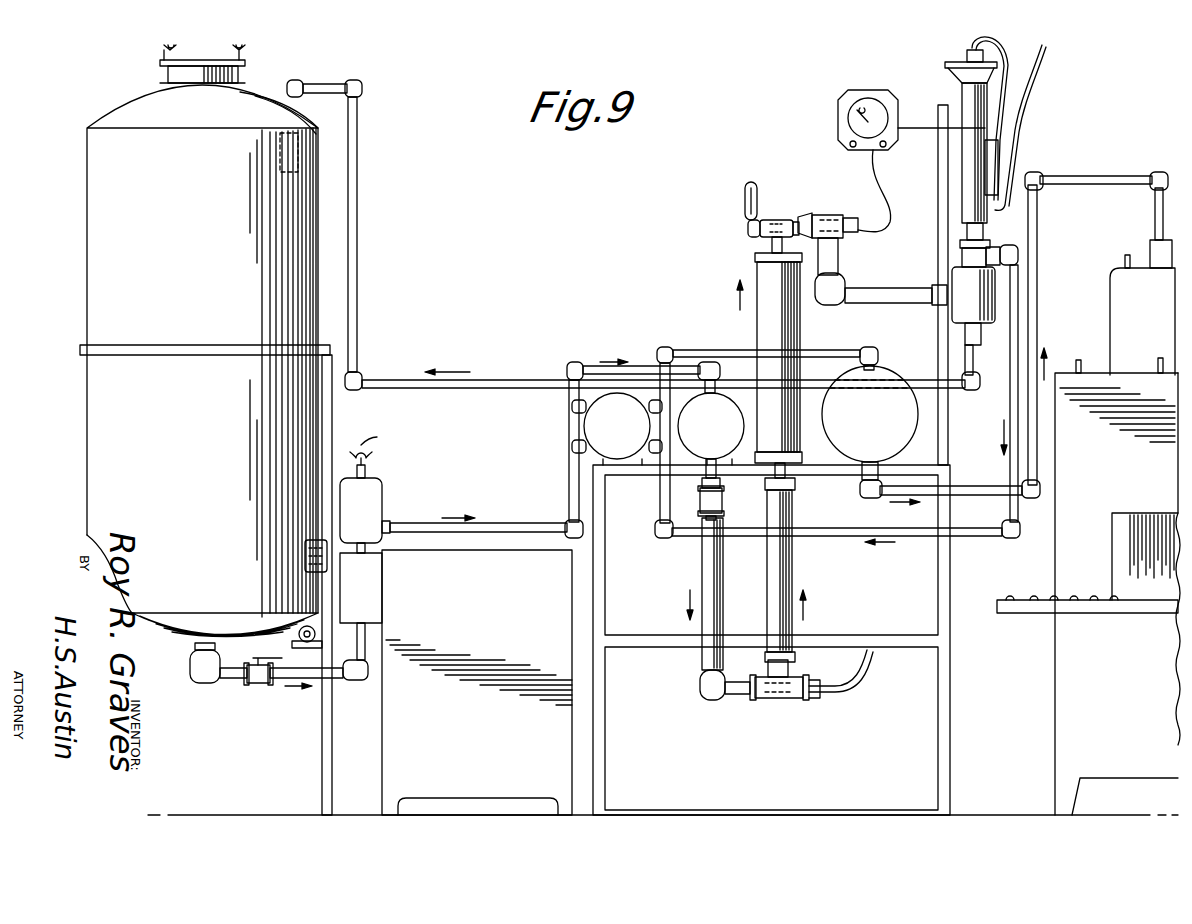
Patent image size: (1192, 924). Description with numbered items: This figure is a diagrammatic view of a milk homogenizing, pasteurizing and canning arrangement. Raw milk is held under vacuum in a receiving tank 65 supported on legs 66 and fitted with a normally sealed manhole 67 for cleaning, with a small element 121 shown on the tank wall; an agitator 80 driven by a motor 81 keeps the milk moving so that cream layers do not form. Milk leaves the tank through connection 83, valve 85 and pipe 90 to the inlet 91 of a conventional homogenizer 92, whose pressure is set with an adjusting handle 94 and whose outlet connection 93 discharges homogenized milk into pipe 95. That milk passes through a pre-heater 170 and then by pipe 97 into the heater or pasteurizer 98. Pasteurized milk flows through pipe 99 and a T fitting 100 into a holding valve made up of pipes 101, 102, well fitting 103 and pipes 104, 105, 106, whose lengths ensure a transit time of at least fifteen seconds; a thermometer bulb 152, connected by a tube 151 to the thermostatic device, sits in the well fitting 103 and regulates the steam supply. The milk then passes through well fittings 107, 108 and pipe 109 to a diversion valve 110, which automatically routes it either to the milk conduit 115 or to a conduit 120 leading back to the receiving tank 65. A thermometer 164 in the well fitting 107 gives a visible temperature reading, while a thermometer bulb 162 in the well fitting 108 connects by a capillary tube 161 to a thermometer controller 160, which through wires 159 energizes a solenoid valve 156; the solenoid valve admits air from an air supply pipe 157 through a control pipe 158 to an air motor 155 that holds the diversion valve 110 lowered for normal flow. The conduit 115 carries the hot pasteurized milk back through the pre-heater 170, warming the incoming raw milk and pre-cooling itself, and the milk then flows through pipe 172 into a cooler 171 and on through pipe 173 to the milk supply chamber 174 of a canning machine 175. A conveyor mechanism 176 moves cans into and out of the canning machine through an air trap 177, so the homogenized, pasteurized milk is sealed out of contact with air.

The receiving tank 65 is at (100, 235).
The legs 66 is at (322, 750).
The manhole 67 is at (200, 63).
The agitator 80 is at (316, 540).
The motor 81 is at (318, 636).
The connection 83 is at (230, 678).
The valve 85 is at (262, 683).
The pipe 90 is at (355, 678).
The inlet 91 is at (372, 588).
The homogenizer 92 is at (400, 718).
The outlet connection 93 is at (383, 490).
The adjusting handle 94 is at (368, 455).
The pipe 95 is at (512, 524).
The pipe 97 is at (620, 366).
The heater or pasteurizer 98 is at (690, 425).
The pipe 99 is at (720, 480).
The T fitting 100 is at (722, 500).
The pipe 101 is at (705, 555).
The pipe 102 is at (738, 695).
The well fitting 103 is at (770, 698).
The pipe 104 is at (792, 556).
The pipe 105 is at (795, 484).
The pipe 106 is at (760, 325).
The well fitting 107 is at (778, 222).
The well fitting 108 is at (823, 215).
The pipe 109 is at (880, 290).
The diversion valve 110 is at (985, 300).
The milk conduit 115 is at (1010, 396).
The conduit 120 is at (490, 382).
The sight gauge 121 is at (300, 155).
The hose 151 is at (862, 688).
The thermometer bulb 152 is at (818, 698).
The air motor 155 is at (965, 63).
The solenoid valve 156 is at (998, 168).
The air supply pipe 157 is at (1022, 108).
The control pipe 158 is at (1012, 70).
The wires 159 is at (910, 126).
The thermometer controller 160 is at (838, 114).
The capillary tube 161 is at (893, 196).
The thermometer bulb 162 is at (860, 230).
The thermometer 164 is at (745, 204).
The pre-heater 170 is at (592, 432).
The cooler 171 is at (857, 436).
The pipe 172 is at (668, 347).
The pipe 173 is at (1155, 216).
The milk supply chamber 174 is at (1115, 305).
The canning machine 175 is at (1092, 380).
The conveyor mechanism 176 is at (1027, 600).
The air trap 177 is at (1122, 518).